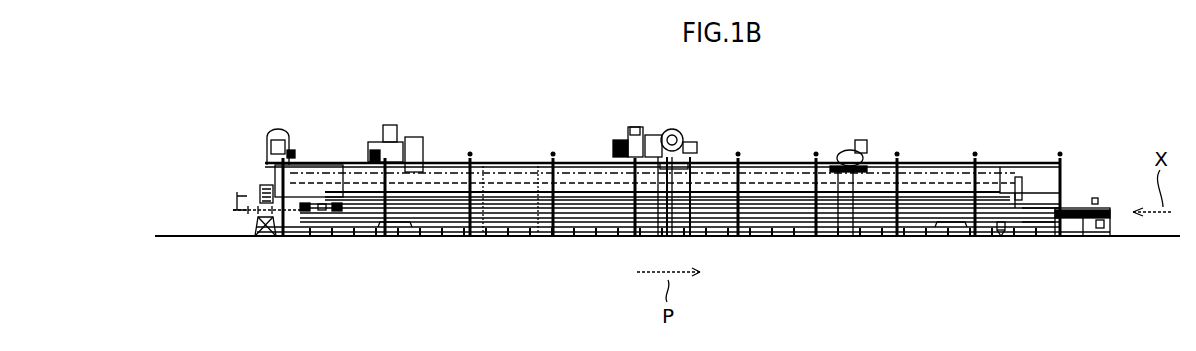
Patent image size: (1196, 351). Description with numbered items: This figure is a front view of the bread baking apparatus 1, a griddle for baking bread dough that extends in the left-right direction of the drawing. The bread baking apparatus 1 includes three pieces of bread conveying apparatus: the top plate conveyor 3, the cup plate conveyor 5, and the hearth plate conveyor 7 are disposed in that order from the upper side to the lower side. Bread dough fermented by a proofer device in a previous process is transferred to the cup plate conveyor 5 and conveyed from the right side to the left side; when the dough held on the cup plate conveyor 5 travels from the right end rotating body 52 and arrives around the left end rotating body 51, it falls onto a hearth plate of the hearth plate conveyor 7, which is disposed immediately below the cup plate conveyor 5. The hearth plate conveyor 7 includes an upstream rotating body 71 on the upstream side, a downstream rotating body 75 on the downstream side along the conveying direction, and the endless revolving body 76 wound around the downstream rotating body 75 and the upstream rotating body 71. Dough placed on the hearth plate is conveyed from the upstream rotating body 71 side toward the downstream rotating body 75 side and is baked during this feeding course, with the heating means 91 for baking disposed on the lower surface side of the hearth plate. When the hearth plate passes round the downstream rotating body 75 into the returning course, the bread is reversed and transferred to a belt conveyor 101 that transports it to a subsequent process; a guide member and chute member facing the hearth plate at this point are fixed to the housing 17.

The bread baking apparatus 1 is at (838, 114).
The top plate conveyor 3 is at (926, 192).
The cup plate conveyor 5 is at (1039, 197).
The left end rotating body 51 is at (307, 200).
The right end rotating body 52 is at (1095, 198).
The heating means 91 is at (512, 300).
The upstream rotating body 71 is at (302, 215).
The housing 17 is at (390, 234).
The endless revolving body 76 is at (953, 217).
The hearth plate conveyor 7 is at (924, 264).
The downstream rotating body 75 is at (1005, 218).
The belt conveyor 101 is at (1028, 222).